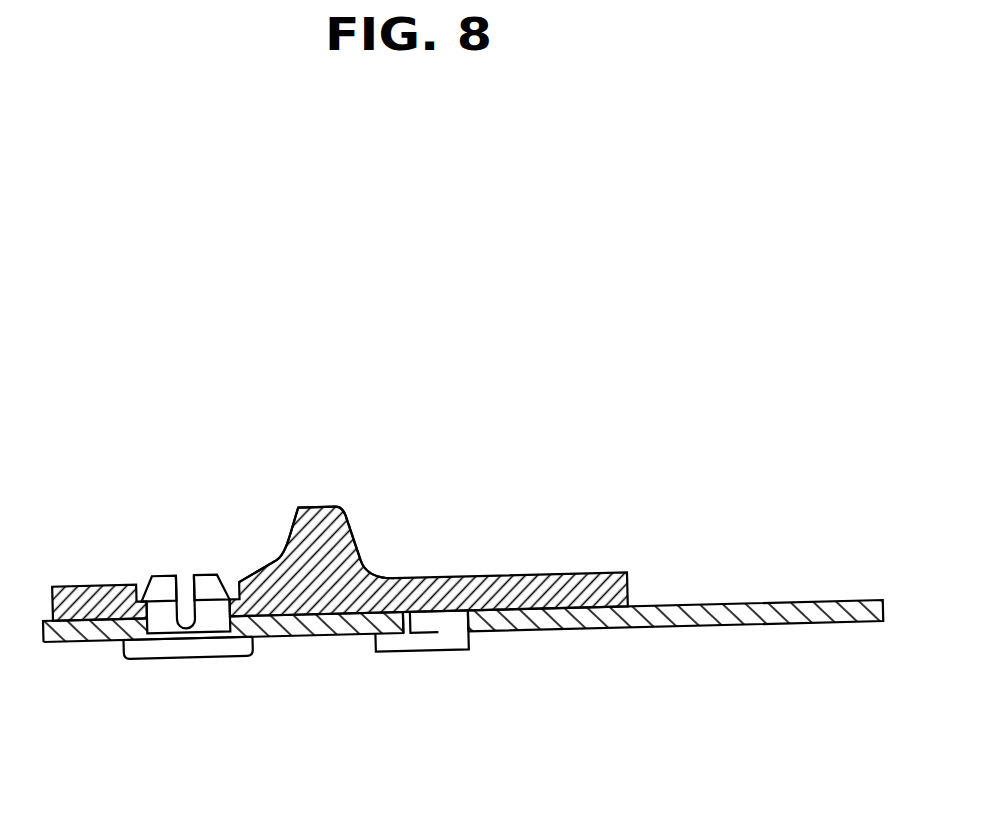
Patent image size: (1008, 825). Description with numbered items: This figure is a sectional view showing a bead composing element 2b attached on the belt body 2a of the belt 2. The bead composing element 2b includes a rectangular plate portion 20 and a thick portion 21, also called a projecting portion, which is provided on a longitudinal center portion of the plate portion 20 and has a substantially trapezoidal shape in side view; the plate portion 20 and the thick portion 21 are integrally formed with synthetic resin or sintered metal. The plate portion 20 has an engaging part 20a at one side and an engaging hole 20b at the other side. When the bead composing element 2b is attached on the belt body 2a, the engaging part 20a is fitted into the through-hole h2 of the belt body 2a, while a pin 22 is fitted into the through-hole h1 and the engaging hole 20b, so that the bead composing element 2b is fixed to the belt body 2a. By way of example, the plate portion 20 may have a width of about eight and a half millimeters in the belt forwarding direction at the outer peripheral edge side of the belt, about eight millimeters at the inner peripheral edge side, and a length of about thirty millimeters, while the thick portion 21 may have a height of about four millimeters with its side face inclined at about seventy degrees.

The belt 2 is at (740, 289).
The belt body 2a is at (688, 605).
The bead composing element 2b is at (570, 346).
The plate portion 20 is at (527, 573).
The thick portion 21 is at (318, 512).
The engaging part 20a is at (417, 651).
The engaging hole 20b is at (220, 608).
The pin 22 is at (168, 660).
The through-hole h1 is at (150, 630).
The through-hole h2 is at (462, 622).